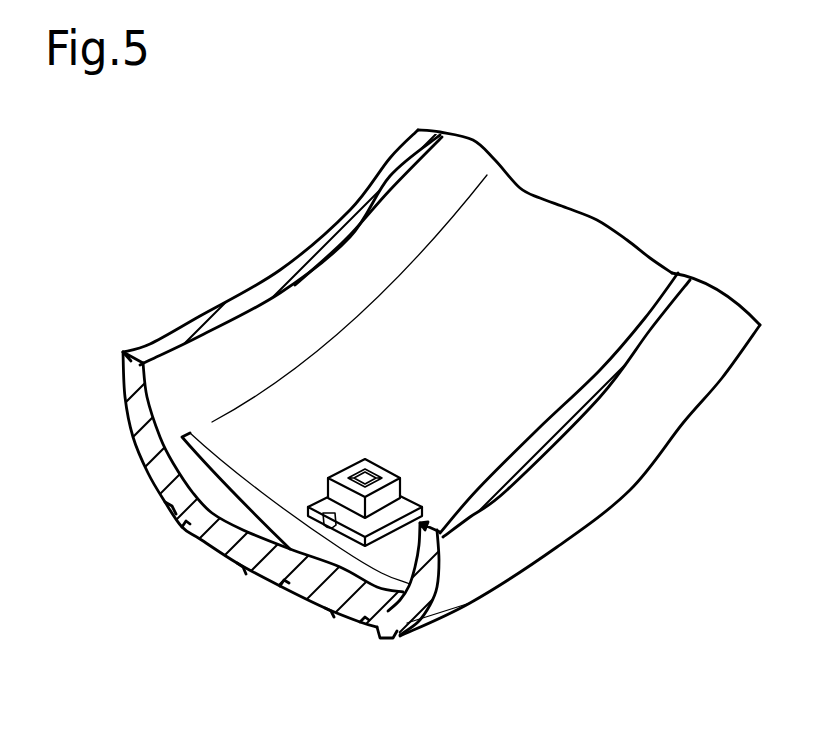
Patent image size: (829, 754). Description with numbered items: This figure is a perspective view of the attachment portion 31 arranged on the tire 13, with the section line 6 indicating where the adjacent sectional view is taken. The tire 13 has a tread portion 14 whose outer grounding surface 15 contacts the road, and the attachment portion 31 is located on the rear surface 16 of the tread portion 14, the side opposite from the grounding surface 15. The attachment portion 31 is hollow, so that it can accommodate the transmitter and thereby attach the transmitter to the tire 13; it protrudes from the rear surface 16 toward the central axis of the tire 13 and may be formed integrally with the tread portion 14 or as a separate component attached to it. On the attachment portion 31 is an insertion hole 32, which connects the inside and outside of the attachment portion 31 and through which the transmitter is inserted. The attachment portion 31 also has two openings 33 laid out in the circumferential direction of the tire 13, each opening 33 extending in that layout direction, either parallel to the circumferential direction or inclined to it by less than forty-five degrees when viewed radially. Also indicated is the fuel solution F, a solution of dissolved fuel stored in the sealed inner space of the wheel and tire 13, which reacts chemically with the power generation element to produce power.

The section line 6- 6 is at (437, 437).
The tire 13 is at (626, 494).
The tread portion 14 is at (382, 640).
The grounding surface 15 is at (258, 577).
The rear surface 16 is at (451, 397).
The attachment portion 31 is at (404, 488).
The insertion hole 32 is at (366, 470).
The openings 33 is at (330, 515).
The fuel solution F is at (240, 481).